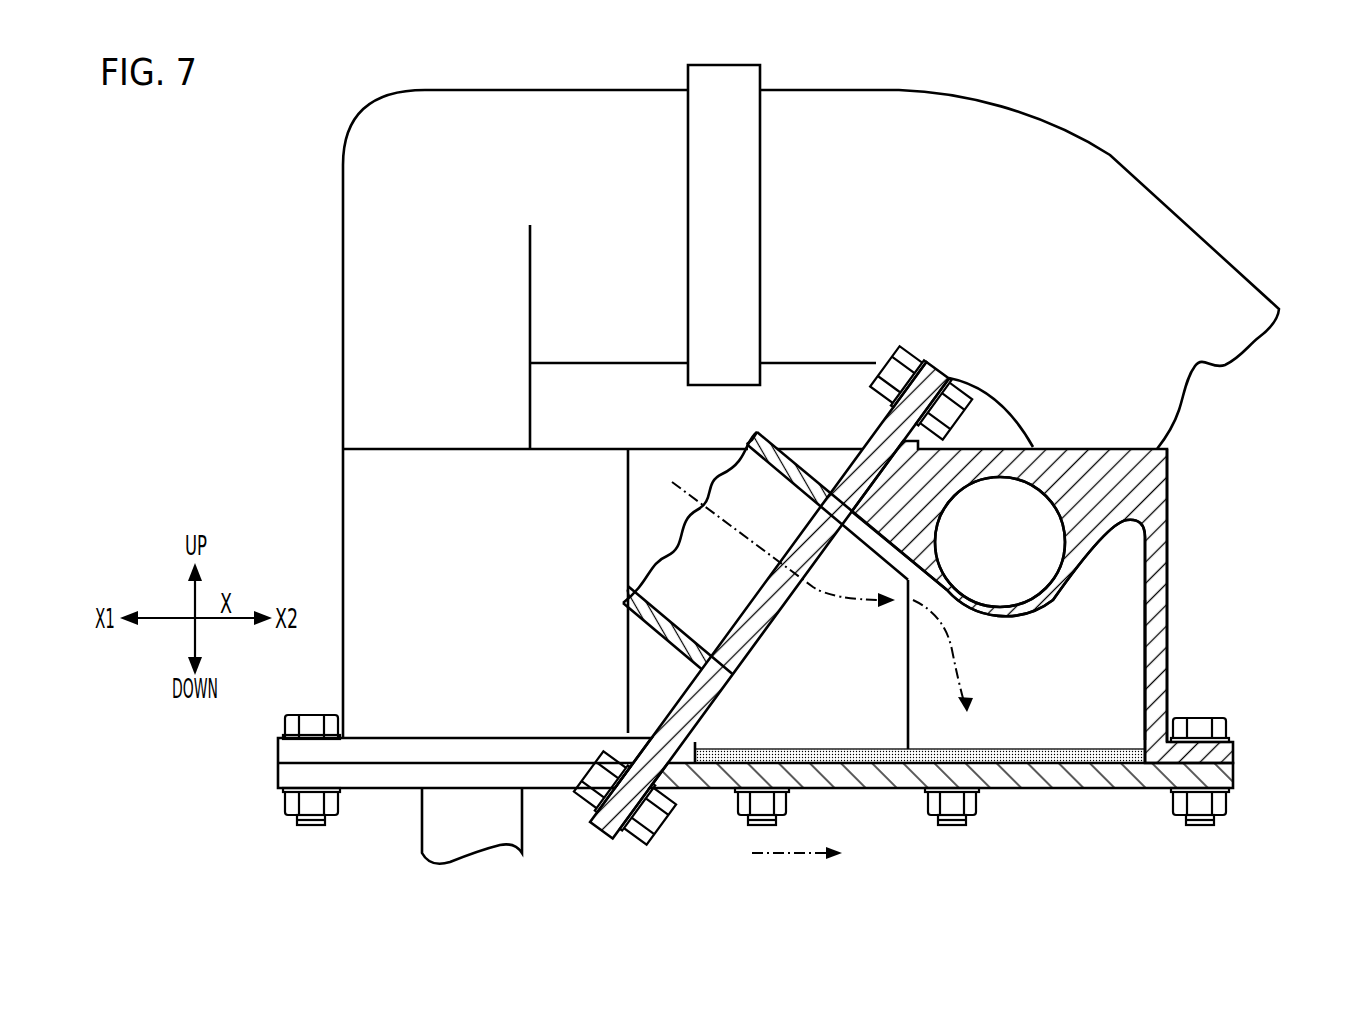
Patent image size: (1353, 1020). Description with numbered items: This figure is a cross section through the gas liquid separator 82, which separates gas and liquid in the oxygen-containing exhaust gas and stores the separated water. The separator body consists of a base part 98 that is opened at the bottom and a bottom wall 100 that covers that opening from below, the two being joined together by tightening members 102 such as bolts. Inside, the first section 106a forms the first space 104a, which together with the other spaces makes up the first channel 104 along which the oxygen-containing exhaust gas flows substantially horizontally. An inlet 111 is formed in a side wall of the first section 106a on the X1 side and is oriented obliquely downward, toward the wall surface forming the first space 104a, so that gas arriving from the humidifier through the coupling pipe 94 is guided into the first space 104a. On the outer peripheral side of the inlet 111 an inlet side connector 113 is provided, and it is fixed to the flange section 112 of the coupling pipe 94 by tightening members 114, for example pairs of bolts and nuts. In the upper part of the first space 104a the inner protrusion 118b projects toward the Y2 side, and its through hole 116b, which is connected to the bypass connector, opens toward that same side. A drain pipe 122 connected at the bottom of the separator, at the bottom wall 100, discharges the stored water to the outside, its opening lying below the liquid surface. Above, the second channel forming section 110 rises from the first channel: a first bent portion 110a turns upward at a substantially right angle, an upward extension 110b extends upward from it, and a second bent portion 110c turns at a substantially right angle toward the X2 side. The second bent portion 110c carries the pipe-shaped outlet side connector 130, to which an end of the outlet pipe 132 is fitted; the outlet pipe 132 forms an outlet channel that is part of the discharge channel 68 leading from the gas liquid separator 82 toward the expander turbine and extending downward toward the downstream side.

The gas liquid separator 82 is at (362, 97).
The coupling pipe 94 is at (865, 650).
The discharge channel 68 is at (663, 628).
The base part 98 is at (1160, 470).
The bottom wall 100 is at (1092, 780).
The tightening members 102 is at (1218, 803).
The first channel 104 is at (1113, 665).
The first space 104a is at (1109, 664).
The first section 106a is at (1165, 580).
The second channel forming section 110 is at (242, 188).
The first bent portion 110a is at (370, 505).
The upward extension 110b is at (370, 345).
The second bent portion 110c is at (340, 165).
The inlet 111 is at (755, 637).
The flange section 112 is at (927, 378).
The inlet side connector 113 is at (945, 377).
The tightening members 114 is at (970, 403).
The through hole 116b is at (1027, 582).
The inner protrusion 118b is at (1060, 593).
The drain pipe 122 is at (433, 825).
The outlet side connector 130 is at (695, 78).
The outlet pipe 132 is at (1110, 155).